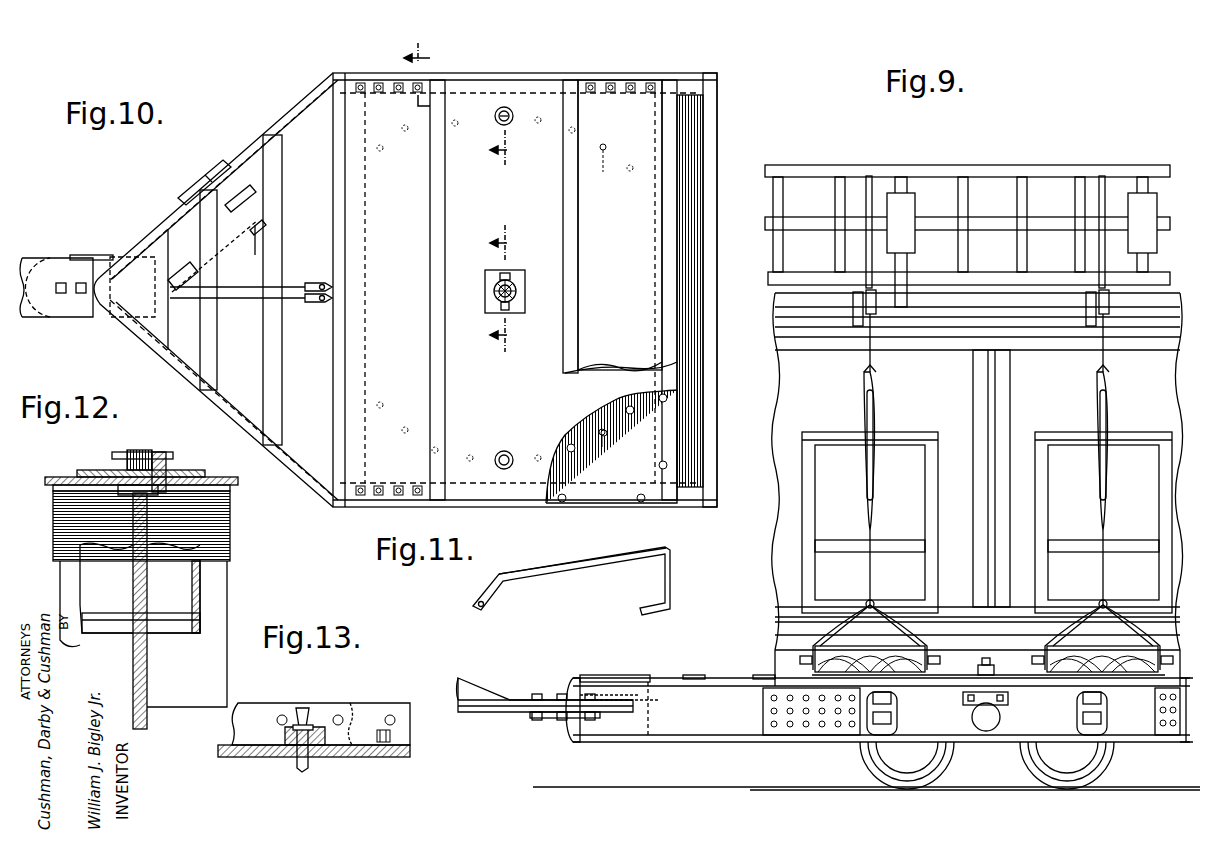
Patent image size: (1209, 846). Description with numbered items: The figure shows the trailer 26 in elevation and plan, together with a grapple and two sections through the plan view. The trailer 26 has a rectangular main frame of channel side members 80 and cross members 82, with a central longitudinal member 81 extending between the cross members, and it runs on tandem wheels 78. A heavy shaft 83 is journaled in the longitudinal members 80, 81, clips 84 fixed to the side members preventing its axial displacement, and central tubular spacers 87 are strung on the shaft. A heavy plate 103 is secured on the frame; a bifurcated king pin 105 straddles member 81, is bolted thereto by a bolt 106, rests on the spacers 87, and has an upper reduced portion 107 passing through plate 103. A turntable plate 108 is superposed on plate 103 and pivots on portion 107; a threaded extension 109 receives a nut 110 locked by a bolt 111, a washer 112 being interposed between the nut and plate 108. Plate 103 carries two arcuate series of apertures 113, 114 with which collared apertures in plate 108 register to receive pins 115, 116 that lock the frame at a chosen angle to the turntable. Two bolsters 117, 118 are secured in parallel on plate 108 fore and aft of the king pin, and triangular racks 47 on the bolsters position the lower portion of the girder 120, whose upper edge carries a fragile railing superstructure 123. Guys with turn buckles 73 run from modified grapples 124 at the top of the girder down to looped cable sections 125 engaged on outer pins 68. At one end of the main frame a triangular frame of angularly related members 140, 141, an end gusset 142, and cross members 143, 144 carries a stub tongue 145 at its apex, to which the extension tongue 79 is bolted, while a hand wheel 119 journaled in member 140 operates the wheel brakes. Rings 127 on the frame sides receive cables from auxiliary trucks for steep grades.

In FIG. 10, the trailer 26 is at (712, 74).
In FIG. 9, the triangular rack 47 is at (918, 432).
In FIG. 9, the outer pin 68 is at (941, 660).
In FIG. 9, the turn buckle 73 is at (877, 418).
In FIG. 9, the wheels 78 is at (940, 780).
In FIG. 10, the extension tongue 79 is at (26, 265).
In FIG. 9, the extension tongue 79 is at (483, 690).
In FIG. 10, the side member 80 is at (690, 74).
In FIG. 9, the side member 80 is at (1135, 724).
In FIG. 10, the central longitudinal member 81 is at (622, 296).
In FIG. 12, the central longitudinal member 81 is at (148, 716).
In FIG. 10, the cross member 82 is at (712, 290).
In FIG. 12, the cross member 82 is at (222, 565).
In FIG. 9, the cross member 82 is at (1188, 742).
In FIG. 12, the shaft 83 is at (205, 612).
In FIG. 9, the shaft 83 is at (990, 720).
In FIG. 9, the clip 84 is at (966, 704).
In FIG. 12, the central tubular spacer 87 is at (200, 635).
In FIG. 10, the heavy plate 103 is at (608, 501).
In FIG. 12, the heavy plate 103 is at (222, 495).
In FIG. 13, the heavy plate 103 is at (358, 757).
In FIG. 12, the king pin 105 is at (120, 548).
In FIG. 12, the bolt 106 is at (170, 548).
In FIG. 12, the upper reduced portion 107 is at (182, 474).
In FIG. 10, the turntable plate 108 is at (522, 503).
In FIG. 12, the turntable plate 108 is at (216, 480).
In FIG. 13, the turntable plate 108 is at (258, 750).
In FIG. 9, the turntable plate 108 is at (1006, 680).
In FIG. 10, the threaded extension 109 is at (516, 296).
In FIG. 12, the threaded extension 109 is at (140, 452).
In FIG. 10, the nut 110 is at (494, 304).
In FIG. 12, the nut 110 is at (165, 456).
In FIG. 10, the bolt 111 is at (500, 276).
In FIG. 12, the bolt 111 is at (172, 470).
In FIG. 10, the washer 112 is at (520, 276).
In FIG. 12, the washer 112 is at (104, 470).
In FIG. 10, the apertures 113 is at (620, 172).
In FIG. 10, the apertures 114 is at (606, 440).
In FIG. 10, the pin 115 is at (513, 115).
In FIG. 13, the pin 115 is at (312, 712).
In FIG. 10, the pin 116 is at (512, 450).
In FIG. 9, the pin 116 is at (990, 660).
In FIG. 9, the bolster 117 is at (815, 650).
In FIG. 9, the bolster 118 is at (986, 650).
In FIG. 10, the hand wheel 119 is at (203, 172).
In FIG. 9, the girder 120 is at (977, 489).
In FIG. 9, the superstructure 123 is at (992, 152).
In FIG. 11, the grapple 124 is at (590, 568).
In FIG. 9, the grapple 124 is at (1106, 292).
In FIG. 9, the looped cable section 125 is at (878, 610).
In FIG. 9, the ring 127 is at (852, 740).
In FIG. 10, the triangular frame member 140 is at (250, 138).
In FIG. 10, the triangular frame member 141 is at (243, 391).
In FIG. 9, the triangular frame member 141 is at (718, 722).
In FIG. 10, the end gusset 142 is at (162, 220).
In FIG. 9, the end gusset 142 is at (636, 675).
In FIG. 10, the cross member 143 is at (222, 358).
In FIG. 9, the cross member 143 is at (705, 664).
In FIG. 10, the cross member 144 is at (282, 262).
In FIG. 9, the cross member 144 is at (765, 675).
In FIG. 10, the stub tongue 145 is at (93, 255).
In FIG. 9, the stub tongue 145 is at (550, 718).